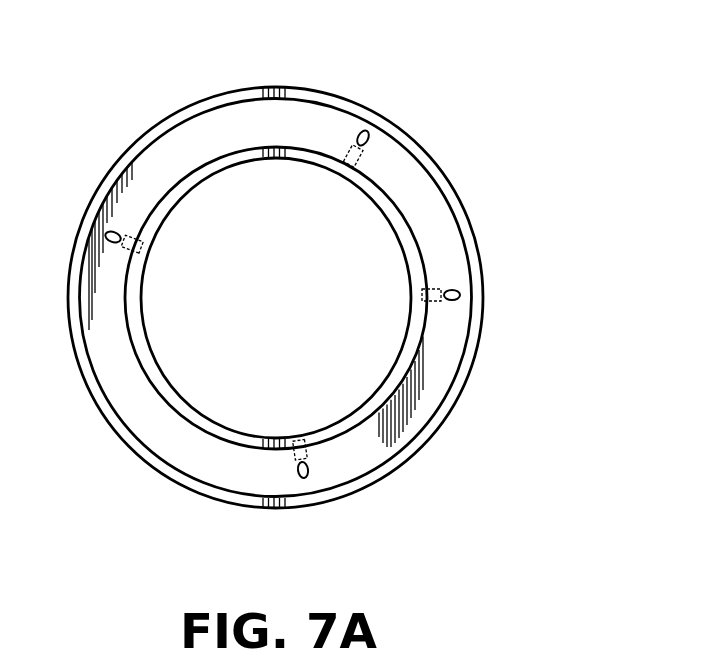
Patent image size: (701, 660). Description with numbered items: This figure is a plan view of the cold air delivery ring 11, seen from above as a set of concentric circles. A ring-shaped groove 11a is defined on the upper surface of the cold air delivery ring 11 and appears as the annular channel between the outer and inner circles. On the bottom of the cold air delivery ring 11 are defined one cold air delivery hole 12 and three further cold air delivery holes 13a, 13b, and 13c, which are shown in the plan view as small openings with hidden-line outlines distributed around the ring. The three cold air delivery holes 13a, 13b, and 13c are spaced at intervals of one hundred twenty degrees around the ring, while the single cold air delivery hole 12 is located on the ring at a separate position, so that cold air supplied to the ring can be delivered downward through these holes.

The cold air delivery ring 11 is at (280, 289).
The ring-shaped groove 11a is at (144, 172).
The cold air delivery hole 12 is at (460, 295).
The cold air delivery hole 13a is at (370, 143).
The cold air delivery hole 13b is at (108, 232).
The cold air delivery hole 13c is at (305, 480).